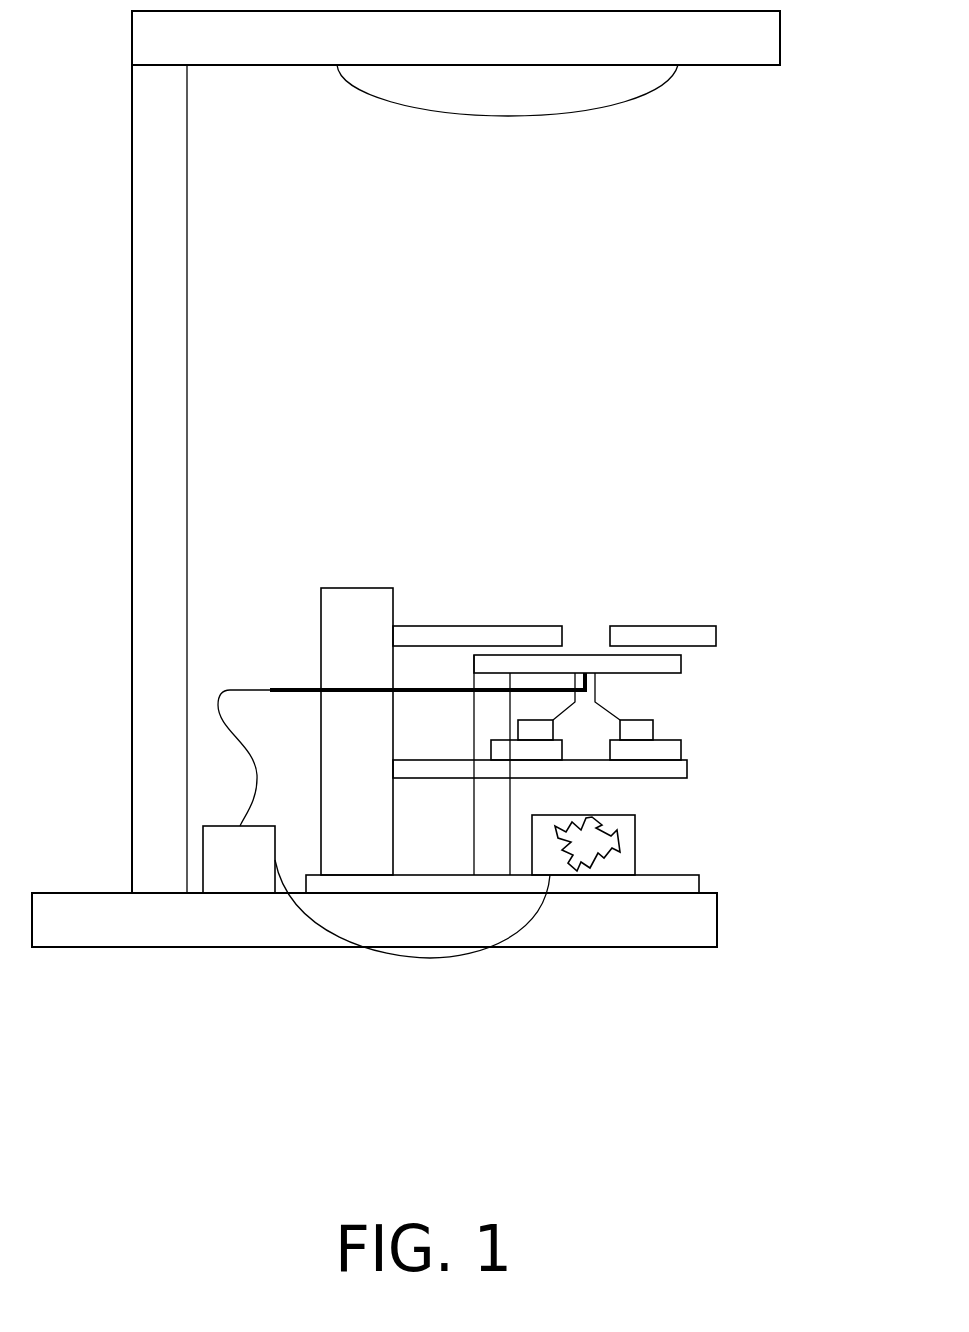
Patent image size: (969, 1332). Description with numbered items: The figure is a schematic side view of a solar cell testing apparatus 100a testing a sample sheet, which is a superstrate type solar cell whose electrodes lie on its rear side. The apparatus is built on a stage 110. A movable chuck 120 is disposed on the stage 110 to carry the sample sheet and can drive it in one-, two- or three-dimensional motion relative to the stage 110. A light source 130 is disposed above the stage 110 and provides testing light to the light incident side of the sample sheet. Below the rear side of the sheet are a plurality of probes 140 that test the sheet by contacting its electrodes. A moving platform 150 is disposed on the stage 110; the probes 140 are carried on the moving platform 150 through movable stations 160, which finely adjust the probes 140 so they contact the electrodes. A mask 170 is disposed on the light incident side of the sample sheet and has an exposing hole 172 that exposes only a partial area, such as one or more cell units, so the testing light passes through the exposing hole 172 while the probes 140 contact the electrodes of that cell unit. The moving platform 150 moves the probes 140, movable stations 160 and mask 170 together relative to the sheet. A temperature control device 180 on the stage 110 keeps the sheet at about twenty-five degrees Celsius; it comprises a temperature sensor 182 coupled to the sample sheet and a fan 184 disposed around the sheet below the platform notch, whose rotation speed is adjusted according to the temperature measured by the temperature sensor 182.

The solar cell testing apparatus 100a is at (905, 1033).
The stage 110 is at (655, 922).
The movable chuck 120 is at (667, 663).
The light source 130 is at (567, 90).
The probes 140 is at (597, 693).
The moving platform 150 is at (655, 767).
The movable stations 160 is at (658, 750).
The mask 170 is at (705, 636).
The exposing hole 172 is at (597, 606).
The temperature control device 180 is at (553, 1042).
The temperature sensor 182 is at (237, 878).
The fan 184 is at (626, 863).